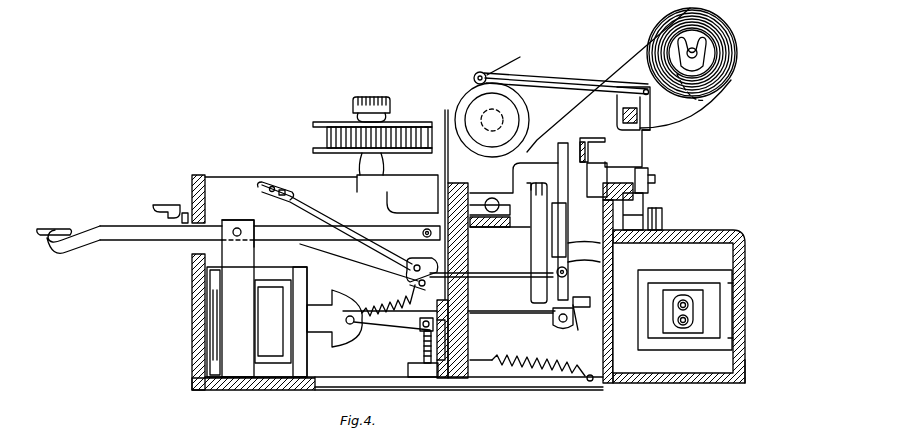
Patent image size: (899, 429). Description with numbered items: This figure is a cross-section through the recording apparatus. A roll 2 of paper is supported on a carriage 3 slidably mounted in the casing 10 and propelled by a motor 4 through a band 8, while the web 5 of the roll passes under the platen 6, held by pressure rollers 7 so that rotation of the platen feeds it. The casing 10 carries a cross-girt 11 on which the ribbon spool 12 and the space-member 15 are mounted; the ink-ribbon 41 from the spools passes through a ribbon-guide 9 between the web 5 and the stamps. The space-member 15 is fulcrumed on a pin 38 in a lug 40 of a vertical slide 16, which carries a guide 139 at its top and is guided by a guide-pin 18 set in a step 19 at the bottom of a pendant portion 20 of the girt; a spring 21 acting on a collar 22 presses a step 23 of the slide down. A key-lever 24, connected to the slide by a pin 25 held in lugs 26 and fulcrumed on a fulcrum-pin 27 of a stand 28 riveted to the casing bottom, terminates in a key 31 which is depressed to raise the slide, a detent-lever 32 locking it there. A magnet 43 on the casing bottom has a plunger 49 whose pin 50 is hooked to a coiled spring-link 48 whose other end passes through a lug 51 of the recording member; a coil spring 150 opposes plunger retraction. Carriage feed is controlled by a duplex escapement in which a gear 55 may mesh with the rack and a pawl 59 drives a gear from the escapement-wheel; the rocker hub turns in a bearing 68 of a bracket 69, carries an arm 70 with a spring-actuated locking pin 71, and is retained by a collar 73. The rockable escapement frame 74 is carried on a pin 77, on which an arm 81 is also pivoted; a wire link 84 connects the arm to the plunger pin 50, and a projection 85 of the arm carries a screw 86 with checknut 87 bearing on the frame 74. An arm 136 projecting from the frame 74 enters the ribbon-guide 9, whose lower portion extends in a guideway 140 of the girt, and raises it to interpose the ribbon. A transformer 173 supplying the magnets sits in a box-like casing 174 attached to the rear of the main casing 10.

The roll 2 is at (731, 45).
The carriage 3 is at (645, 150).
The motor 4 is at (528, 186).
The web 5 is at (623, 62).
The printing roll or platen 6 is at (467, 99).
The pressure rollers 7 is at (477, 72).
The band 8 is at (542, 185).
The ribbon-guide 9 is at (447, 113).
The casing 10 is at (193, 333).
The cross-girt 11 is at (418, 182).
The ribbon spool 12 is at (325, 122).
The space-member 15 is at (325, 215).
The vertical plate or slide 16 is at (443, 203).
The guide-pin 18 is at (424, 348).
The step 19 is at (415, 376).
The pendant portion 20 is at (469, 340).
The spring 21 is at (470, 330).
The collar 22 is at (420, 325).
The step 23 is at (408, 366).
The key-lever 24 is at (163, 233).
The pin 25 is at (425, 229).
The lugs 26 is at (414, 232).
The fulcrum-pin 27 is at (237, 228).
The stand 28 is at (255, 253).
The finger-piece or key 31 is at (48, 228).
The detent-lever 32 is at (165, 205).
The pin 38 is at (407, 272).
The lug 40 is at (412, 280).
The ink-ribbon 41 is at (394, 153).
The magnet 43 is at (305, 283).
The coiled spring-link 48 is at (380, 300).
The solenoid plunger 49 is at (338, 348).
The pin 50 is at (346, 320).
The lug 51 is at (424, 282).
The gear 55 is at (583, 138).
The pawl 59 is at (563, 148).
The bearing 68 is at (637, 174).
The bracket 69 is at (615, 258).
The arm 70 is at (643, 204).
The locking pin 71 is at (662, 221).
The collar 73 is at (655, 187).
The rockable frame 74 is at (603, 245).
The pin 77 is at (567, 272).
The arm 81 is at (562, 328).
The wire link 84 is at (520, 313).
The projection 85 is at (553, 330).
The screw 86 is at (582, 308).
The checknut 87 is at (579, 330).
The arm 136 is at (512, 262).
The guide 139 is at (428, 128).
The guideway 140 is at (465, 242).
The coil spring 150 is at (517, 373).
The transformer 173 is at (682, 350).
The casing 174 is at (745, 367).